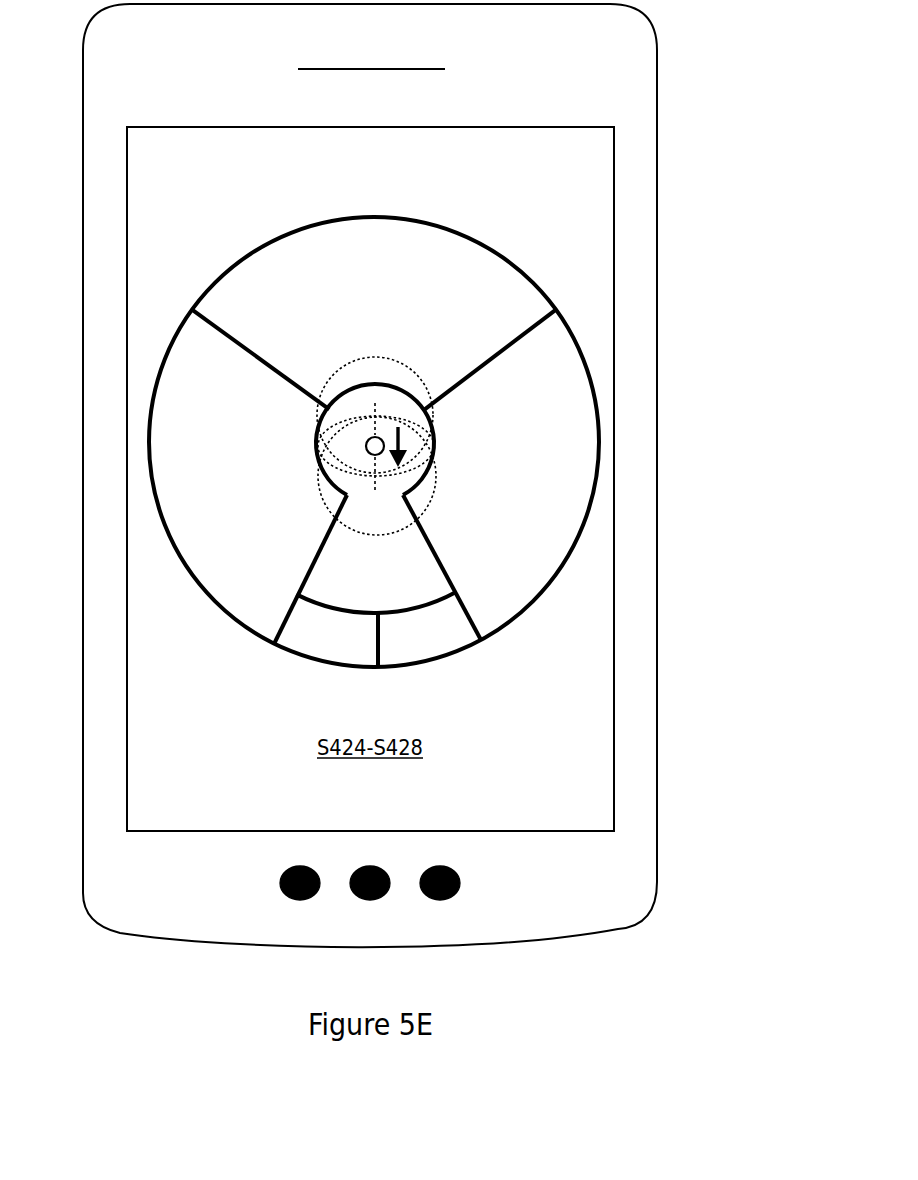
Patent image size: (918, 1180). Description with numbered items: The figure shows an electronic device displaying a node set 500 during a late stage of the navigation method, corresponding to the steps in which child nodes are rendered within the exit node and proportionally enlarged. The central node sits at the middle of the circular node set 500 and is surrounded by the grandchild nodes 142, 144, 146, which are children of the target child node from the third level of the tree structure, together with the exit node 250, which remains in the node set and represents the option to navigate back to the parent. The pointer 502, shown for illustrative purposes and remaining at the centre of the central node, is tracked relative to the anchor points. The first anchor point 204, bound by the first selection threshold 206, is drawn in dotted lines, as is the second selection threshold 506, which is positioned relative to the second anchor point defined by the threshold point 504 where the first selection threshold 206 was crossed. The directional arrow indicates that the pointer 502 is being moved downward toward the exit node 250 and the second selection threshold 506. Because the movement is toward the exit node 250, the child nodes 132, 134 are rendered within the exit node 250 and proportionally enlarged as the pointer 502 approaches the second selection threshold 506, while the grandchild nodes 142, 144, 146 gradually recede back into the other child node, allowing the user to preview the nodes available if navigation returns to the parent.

The node set 500 is at (516, 756).
The pointer 502 is at (325, 480).
The threshold point 504 is at (366, 418).
The second selection threshold 506 is at (320, 404).
The first anchor point 204 is at (383, 478).
The first selection threshold 206 is at (365, 446).
The grandchild node 142 is at (250, 502).
The grandchild node 144 is at (394, 324).
The grandchild node 146 is at (525, 502).
The exit node 250 is at (397, 575).
The child node 132 is at (345, 647).
The child node 134 is at (439, 647).